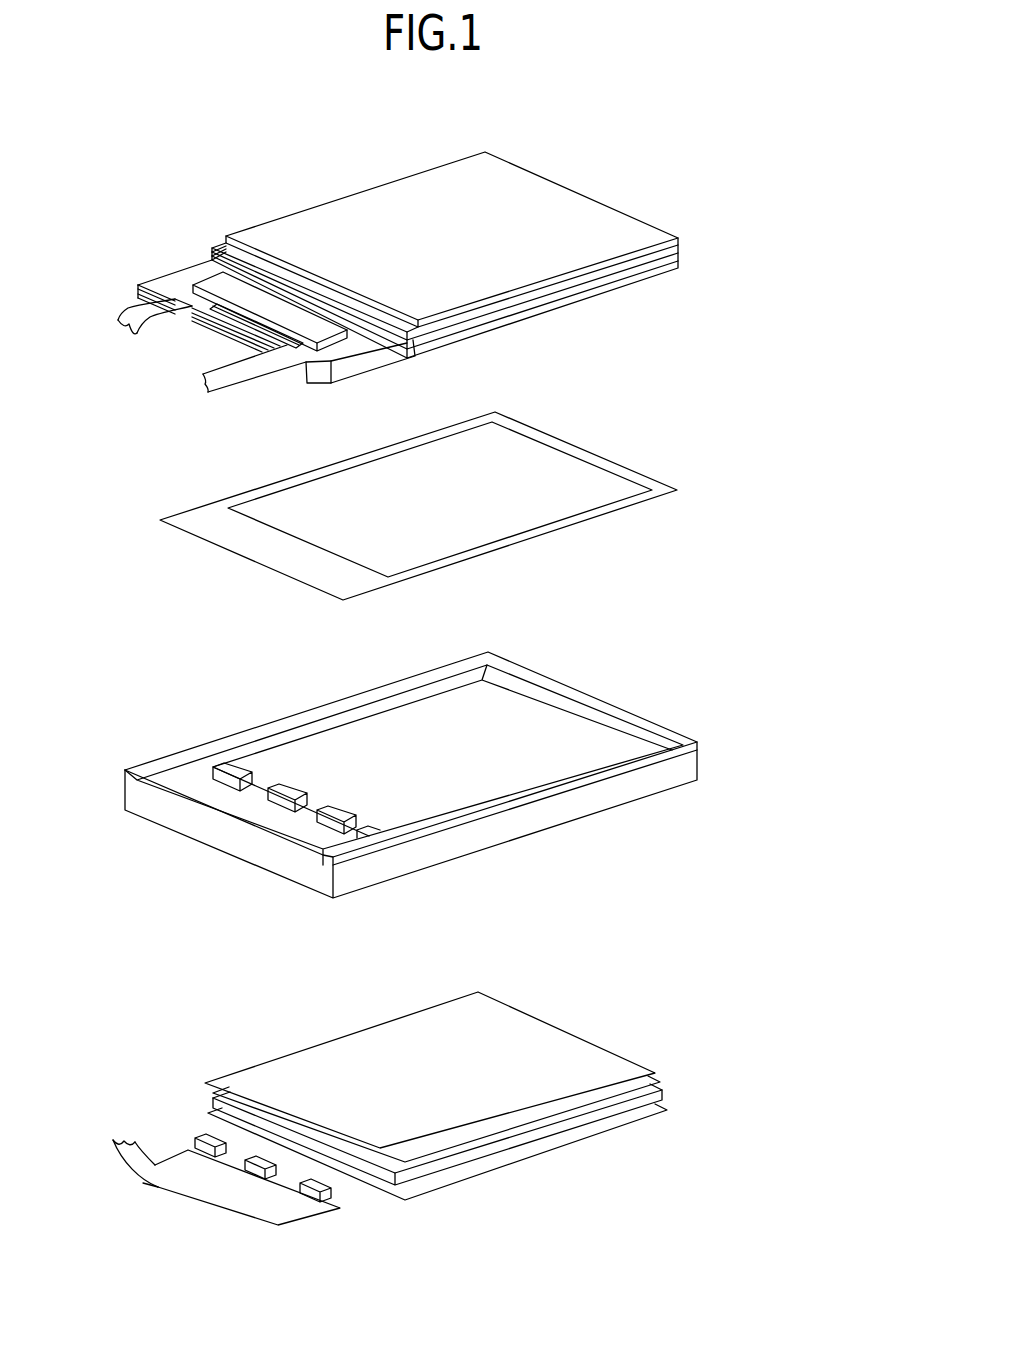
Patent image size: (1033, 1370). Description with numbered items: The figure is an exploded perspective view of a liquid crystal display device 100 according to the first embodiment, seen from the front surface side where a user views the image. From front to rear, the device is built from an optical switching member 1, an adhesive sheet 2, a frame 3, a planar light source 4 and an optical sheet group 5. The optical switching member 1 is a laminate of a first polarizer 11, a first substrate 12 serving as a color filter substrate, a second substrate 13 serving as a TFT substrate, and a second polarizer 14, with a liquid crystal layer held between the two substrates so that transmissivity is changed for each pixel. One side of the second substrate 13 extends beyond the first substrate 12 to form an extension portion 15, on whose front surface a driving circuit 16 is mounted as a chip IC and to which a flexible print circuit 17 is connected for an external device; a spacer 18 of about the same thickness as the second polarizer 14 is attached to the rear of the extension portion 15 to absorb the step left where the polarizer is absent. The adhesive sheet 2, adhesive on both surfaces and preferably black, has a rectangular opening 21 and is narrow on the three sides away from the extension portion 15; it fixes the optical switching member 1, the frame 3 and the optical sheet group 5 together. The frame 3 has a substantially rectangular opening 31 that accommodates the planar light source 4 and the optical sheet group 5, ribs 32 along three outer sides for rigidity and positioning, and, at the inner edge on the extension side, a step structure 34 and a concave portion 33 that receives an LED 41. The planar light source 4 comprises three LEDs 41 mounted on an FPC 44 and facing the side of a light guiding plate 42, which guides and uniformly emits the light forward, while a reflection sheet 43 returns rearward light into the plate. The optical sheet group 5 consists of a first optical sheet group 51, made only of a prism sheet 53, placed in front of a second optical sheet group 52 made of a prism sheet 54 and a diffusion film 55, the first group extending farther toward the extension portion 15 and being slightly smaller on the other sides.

The liquid crystal display device 100 is at (698, 128).
The optical switching member 1 is at (257, 163).
The first polarizer 11 is at (682, 238).
The first substrate 12 is at (682, 247).
The second substrate 13 is at (682, 256).
The second polarizer 14 is at (682, 264).
The extension portion 15 is at (210, 252).
The driving circuit 16 is at (221, 289).
The flexible print circuit 17 is at (237, 378).
The spacer 18 is at (367, 370).
The FPC 44 is at (130, 305).
The adhesive sheet 2 is at (297, 462).
The opening 21 is at (552, 466).
The frame 3 is at (263, 682).
The opening 31 is at (558, 718).
The ribs 32 is at (443, 667).
The concave portion 33 is at (305, 808).
The step structure 34 is at (345, 818).
The planar light source 4 is at (597, 1188).
The optical sheet group 5 is at (777, 978).
The first optical sheet group 51 is at (618, 1052).
The second optical sheet group 52 is at (722, 1012).
The prism sheet 53 is at (430, 1070).
The prism sheet 54 is at (640, 1067).
The diffusion film 55 is at (660, 1080).
The light guiding plate 42 is at (663, 1097).
The reflection sheet 43 is at (637, 1127).
The LEDs 41 is at (203, 1153).